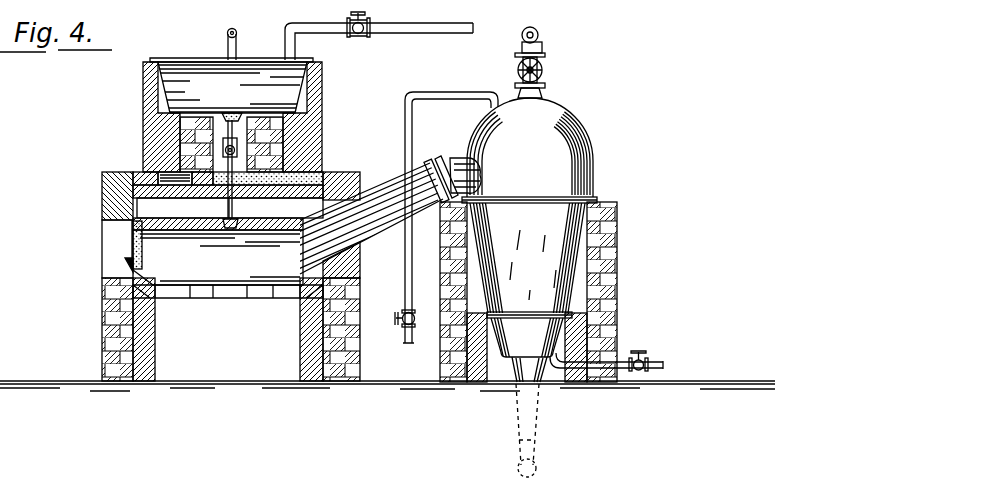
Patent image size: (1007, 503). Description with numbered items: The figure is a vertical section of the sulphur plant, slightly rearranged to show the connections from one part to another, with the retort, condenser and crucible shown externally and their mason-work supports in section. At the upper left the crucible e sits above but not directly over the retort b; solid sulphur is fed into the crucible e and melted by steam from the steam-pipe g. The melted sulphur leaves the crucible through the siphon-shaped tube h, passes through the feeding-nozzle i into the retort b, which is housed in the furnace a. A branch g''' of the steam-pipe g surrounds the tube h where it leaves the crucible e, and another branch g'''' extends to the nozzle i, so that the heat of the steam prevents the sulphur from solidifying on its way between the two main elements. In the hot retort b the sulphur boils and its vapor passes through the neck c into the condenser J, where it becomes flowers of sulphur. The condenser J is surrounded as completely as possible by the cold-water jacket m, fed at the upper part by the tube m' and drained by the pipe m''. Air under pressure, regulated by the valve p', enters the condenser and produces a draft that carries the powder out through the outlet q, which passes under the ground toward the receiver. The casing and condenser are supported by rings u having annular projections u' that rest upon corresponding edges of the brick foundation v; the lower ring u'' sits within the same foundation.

The furnace a is at (117, 249).
The retort b is at (217, 251).
The neck c is at (388, 215).
The crucible e is at (232, 115).
The exit steam-pipe g is at (201, 144).
The branch of the steam-pipe g''' is at (236, 103).
The branch of the steam-pipe g'''' is at (261, 209).
The tube or pipe h is at (240, 150).
The feeding-nozzle i is at (219, 211).
The cold-water jacket m is at (529, 150).
The feed tube m' is at (446, 206).
The outlet pipe m'' is at (627, 353).
The regulating-valve p' is at (542, 62).
The rings u is at (527, 244).
The annular projections u' is at (529, 262).
The lower vessel u'' is at (527, 338).
The brick foundation v is at (618, 266).
The condenser J is at (502, 383).
The outlet q is at (535, 467).